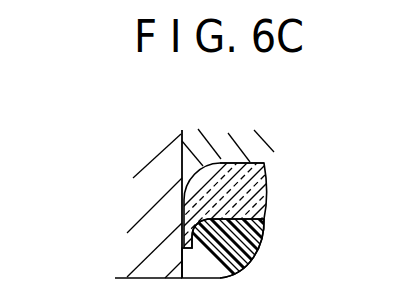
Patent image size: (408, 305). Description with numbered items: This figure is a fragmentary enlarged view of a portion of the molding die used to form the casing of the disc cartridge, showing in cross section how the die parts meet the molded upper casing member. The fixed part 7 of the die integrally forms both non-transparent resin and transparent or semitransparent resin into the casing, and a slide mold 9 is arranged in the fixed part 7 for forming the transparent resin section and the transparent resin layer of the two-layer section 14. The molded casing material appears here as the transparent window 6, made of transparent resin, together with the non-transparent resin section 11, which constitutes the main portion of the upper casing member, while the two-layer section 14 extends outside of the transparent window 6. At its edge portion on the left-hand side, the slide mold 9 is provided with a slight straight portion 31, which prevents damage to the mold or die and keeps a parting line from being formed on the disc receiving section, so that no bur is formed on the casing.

The fixed part 7 is at (160, 165).
The slight straight portion 31 is at (178, 200).
The slide mold 9 is at (274, 136).
The transparent window 6 is at (266, 216).
The two-layer section 14 is at (227, 158).
The non-transparent resin section 11 is at (252, 262).